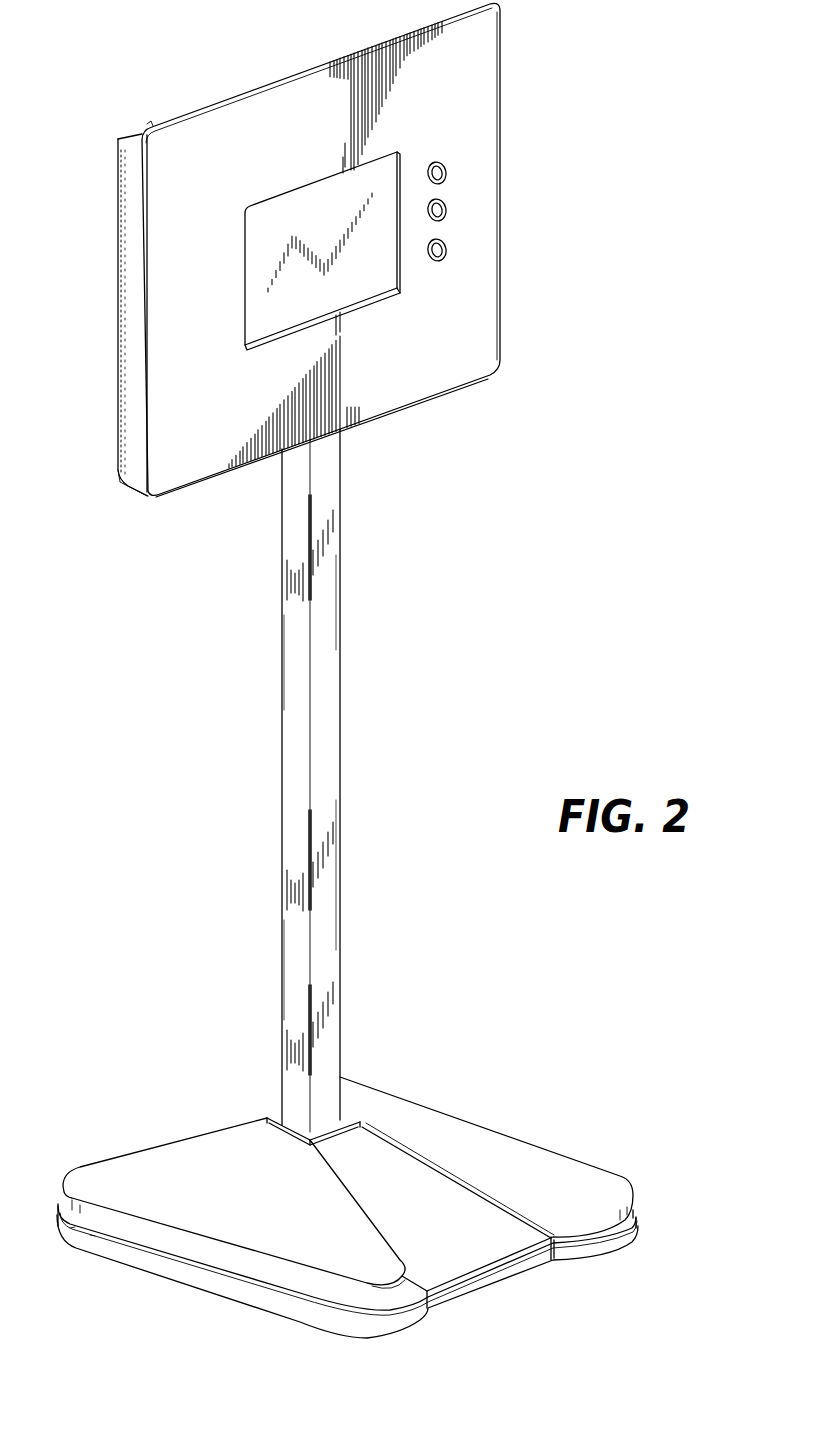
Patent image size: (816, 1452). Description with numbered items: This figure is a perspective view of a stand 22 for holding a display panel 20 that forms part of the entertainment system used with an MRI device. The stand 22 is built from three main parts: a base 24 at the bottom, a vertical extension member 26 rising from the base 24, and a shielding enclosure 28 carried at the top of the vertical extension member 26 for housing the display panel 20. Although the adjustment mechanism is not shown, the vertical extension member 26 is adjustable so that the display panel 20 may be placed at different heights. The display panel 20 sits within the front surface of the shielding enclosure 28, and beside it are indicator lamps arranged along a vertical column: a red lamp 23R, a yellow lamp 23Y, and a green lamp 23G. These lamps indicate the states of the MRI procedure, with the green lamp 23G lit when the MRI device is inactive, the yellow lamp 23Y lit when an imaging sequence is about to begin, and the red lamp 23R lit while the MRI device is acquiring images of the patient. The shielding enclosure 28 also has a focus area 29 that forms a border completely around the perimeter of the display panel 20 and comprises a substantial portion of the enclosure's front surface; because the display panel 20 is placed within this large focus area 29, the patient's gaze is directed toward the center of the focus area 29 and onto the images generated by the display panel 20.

The display panel 20 is at (292, 303).
The stand 22 is at (463, 669).
The red lamp 23R is at (446, 181).
The yellow lamp 23Y is at (446, 218).
The green lamp 23G is at (446, 258).
The base 24 is at (483, 1142).
The vertical extension member 26 is at (328, 705).
The shielding enclosure 28 is at (138, 140).
The focus area 29 is at (188, 140).